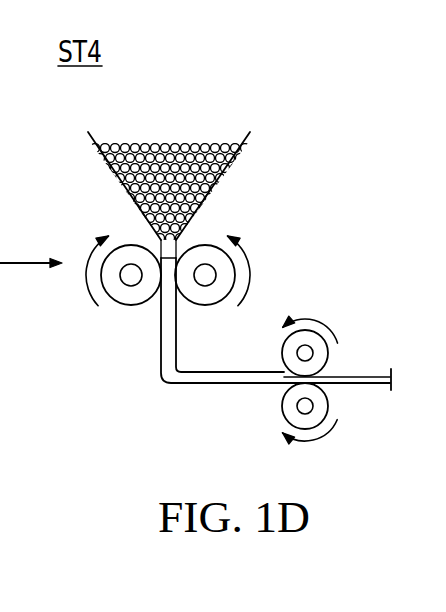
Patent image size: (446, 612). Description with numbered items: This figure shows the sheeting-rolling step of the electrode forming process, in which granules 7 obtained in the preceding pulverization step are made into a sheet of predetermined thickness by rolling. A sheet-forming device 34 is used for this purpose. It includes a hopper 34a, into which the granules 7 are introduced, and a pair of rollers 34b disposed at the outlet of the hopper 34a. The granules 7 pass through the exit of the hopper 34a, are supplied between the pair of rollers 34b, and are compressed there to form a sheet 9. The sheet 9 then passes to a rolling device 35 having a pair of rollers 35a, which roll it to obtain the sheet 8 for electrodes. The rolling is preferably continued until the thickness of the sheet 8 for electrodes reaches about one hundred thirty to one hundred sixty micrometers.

The granules 7 is at (179, 148).
The sheet for electrodes 8 is at (372, 373).
The sheet 9 is at (160, 383).
The sheet-forming device 34 is at (258, 238).
The hopper 34a is at (247, 139).
The rollers 34b is at (128, 305).
The rolling device 35 is at (327, 307).
The rollers 35a is at (323, 360).